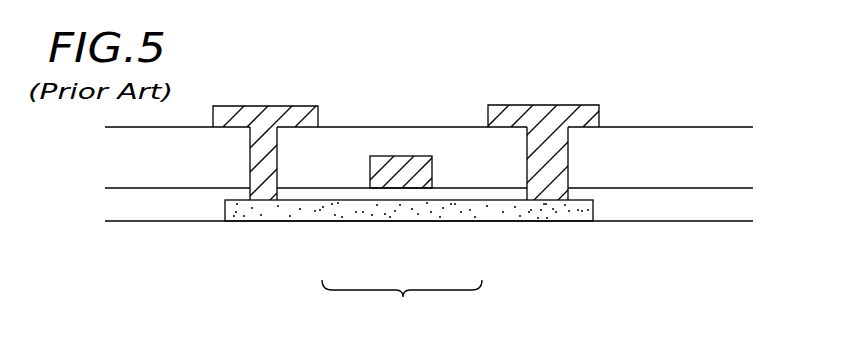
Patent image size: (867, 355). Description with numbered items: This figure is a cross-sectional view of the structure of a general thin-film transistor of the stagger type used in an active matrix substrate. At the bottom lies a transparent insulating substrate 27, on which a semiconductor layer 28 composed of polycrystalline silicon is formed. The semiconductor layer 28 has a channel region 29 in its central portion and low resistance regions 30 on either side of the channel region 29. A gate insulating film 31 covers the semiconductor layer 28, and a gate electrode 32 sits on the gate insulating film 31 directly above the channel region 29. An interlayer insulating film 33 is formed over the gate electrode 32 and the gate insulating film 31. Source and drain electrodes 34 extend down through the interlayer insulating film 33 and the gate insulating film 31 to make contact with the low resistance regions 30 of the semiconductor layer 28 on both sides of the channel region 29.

The transparent insulating substrate 27 is at (738, 240).
The semiconductor layer 28 is at (402, 307).
The channel region 29 is at (400, 210).
The low resistance regions 30 is at (327, 210).
The gate insulating film 31 is at (748, 202).
The gate electrode 32 is at (424, 156).
The interlayer insulating film 33 is at (709, 127).
The source and drain electrodes 34 is at (298, 113).